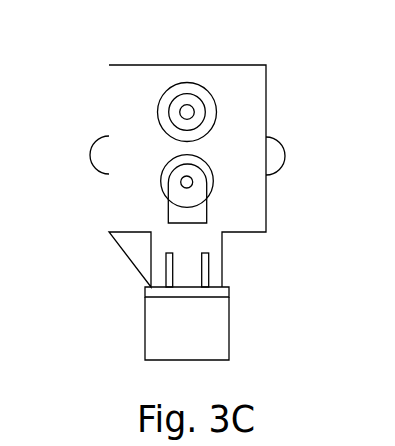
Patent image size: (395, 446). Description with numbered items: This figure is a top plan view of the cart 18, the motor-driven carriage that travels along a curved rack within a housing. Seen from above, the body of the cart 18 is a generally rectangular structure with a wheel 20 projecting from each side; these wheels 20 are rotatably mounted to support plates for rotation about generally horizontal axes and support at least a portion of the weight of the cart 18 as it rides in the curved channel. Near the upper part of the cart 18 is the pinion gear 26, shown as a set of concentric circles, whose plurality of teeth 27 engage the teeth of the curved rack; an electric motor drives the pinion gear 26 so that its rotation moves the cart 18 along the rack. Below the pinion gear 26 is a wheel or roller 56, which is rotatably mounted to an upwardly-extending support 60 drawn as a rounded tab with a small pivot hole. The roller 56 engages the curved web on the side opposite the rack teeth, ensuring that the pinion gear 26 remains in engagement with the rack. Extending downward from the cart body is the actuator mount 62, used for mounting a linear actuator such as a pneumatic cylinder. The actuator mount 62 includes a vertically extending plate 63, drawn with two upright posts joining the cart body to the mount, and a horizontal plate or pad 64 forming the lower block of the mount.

The cart 18 is at (279, 88).
The wheel 20 is at (98, 148).
The pinion gear 26 is at (183, 83).
The teeth 27 is at (188, 83).
The wheel or roller 56 is at (152, 181).
The upwardly-extending support 60 is at (157, 207).
The actuator mount 62 is at (160, 300).
The vertically extending plate 63 is at (220, 299).
The horizontal plate or pad 64 is at (210, 330).